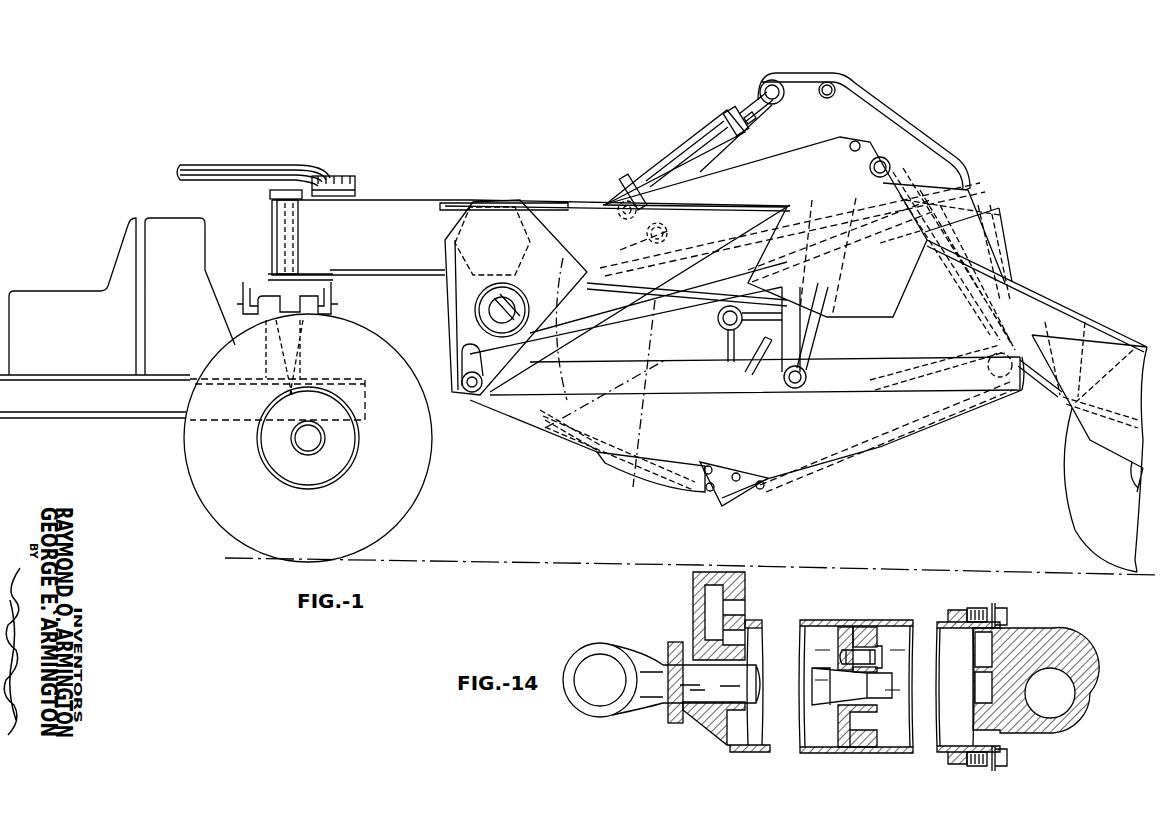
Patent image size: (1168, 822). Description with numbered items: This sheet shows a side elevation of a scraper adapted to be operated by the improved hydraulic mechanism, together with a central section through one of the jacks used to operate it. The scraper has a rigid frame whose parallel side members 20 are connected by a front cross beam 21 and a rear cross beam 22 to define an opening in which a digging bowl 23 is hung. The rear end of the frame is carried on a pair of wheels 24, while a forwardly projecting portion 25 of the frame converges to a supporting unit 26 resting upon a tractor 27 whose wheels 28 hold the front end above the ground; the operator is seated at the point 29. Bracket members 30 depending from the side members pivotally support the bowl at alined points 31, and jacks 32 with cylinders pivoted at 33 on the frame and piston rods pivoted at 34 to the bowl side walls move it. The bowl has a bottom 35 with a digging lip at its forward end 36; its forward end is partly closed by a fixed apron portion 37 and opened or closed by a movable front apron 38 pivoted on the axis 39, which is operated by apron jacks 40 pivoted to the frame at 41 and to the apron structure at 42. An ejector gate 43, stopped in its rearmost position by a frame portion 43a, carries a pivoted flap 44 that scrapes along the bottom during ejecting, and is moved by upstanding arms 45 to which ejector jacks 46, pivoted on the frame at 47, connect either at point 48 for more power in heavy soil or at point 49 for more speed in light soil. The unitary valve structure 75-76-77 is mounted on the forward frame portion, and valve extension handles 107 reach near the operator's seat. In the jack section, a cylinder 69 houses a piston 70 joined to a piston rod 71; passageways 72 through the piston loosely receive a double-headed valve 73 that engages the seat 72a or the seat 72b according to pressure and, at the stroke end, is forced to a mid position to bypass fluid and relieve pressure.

In FIG. 1, the side members 20 is at (572, 212).
In FIG. 1, the front cross beam 21 is at (492, 207).
In FIG. 1, the rear cross beam 22 is at (1068, 310).
In FIG. 1, the digging bowl 23 is at (840, 440).
In FIG. 1, the wheels 24 is at (1068, 450).
In FIG. 1, the forwardly projecting portion 25 is at (378, 270).
In FIG. 1, the supporting unit 26 is at (268, 274).
In FIG. 1, the tractor 27 is at (130, 412).
In FIG. 1, the wheels 28 is at (426, 478).
In FIG. 1, the operator's seat 29 is at (68, 290).
In FIG. 1, the bracket members 30 is at (450, 320).
In FIG. 1, the alined points 31 is at (472, 394).
In FIG. 1, the jacks 32 is at (825, 196).
In FIG. 1, the pivotal cylinder support 33 is at (878, 155).
In FIG. 1, the piston rod pivotal connection 34 is at (808, 378).
In FIG. 1, the bottom 35 is at (915, 428).
In FIG. 1, the digging lip 36 is at (728, 508).
In FIG. 1, the fixed apron portion 37 is at (560, 415).
In FIG. 1, the movable front apron 38 is at (627, 453).
In FIG. 1, the apron pivot axis 39 is at (720, 328).
In FIG. 1, the apron jacks 40 is at (594, 265).
In FIG. 1, the apron jack cylinder pivot 41 is at (490, 310).
In FIG. 1, the apron jack piston rod pivot 42 is at (668, 232).
In FIG. 1, the ejector gate 43 is at (972, 280).
In FIG. 1, the frame portion 43a is at (1010, 238).
In FIG. 1, the flap 44 is at (940, 374).
In FIG. 1, the upstanding arms 45 is at (856, 98).
In FIG. 1, the ejector jack 46 is at (697, 140).
In FIG. 1, the ejector jack cylinder pivot 47 is at (622, 198).
In FIG. 1, the slow connection point 48 is at (771, 80).
In FIG. 1, the fast connection point 49 is at (826, 80).
In FIG. 14, the cylinder 69 is at (812, 622).
In FIG. 14, the piston 70 is at (840, 628).
In FIG. 14, the piston rod 71 is at (682, 705).
In FIG. 14, the passageways 72 is at (855, 627).
In FIG. 14, the valve seat 72a is at (875, 628).
In FIG. 14, the valve seat 72b is at (838, 640).
In FIG. 14, the double-headed valve 73 is at (880, 650).
In FIG. 1, the unitary valve structure 75-76-77 is at (358, 192).
In FIG. 1, the valve extension handles 107 is at (238, 168).